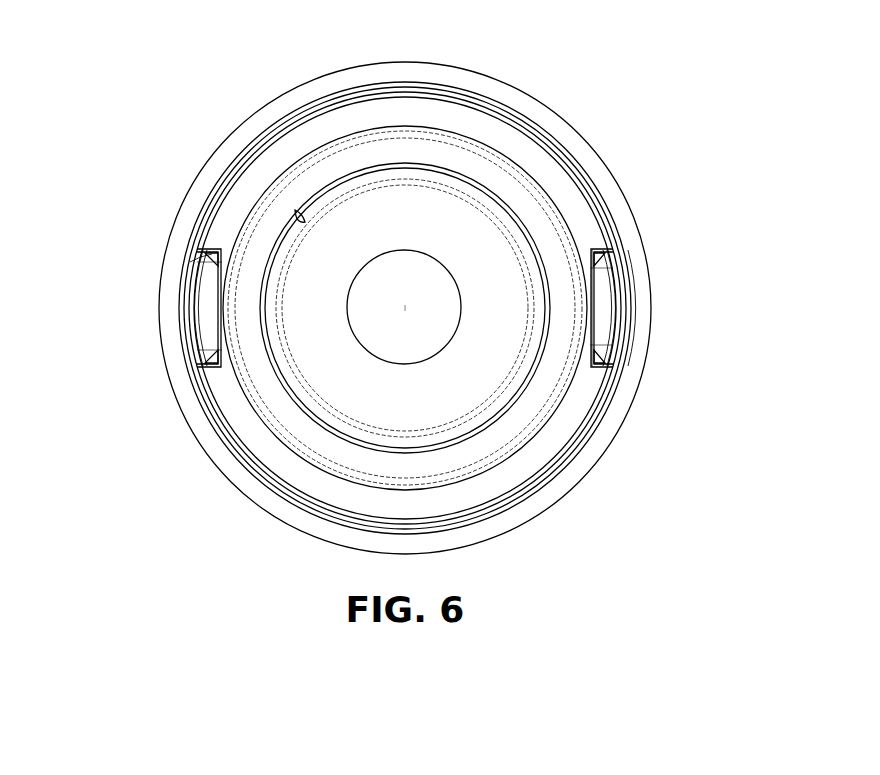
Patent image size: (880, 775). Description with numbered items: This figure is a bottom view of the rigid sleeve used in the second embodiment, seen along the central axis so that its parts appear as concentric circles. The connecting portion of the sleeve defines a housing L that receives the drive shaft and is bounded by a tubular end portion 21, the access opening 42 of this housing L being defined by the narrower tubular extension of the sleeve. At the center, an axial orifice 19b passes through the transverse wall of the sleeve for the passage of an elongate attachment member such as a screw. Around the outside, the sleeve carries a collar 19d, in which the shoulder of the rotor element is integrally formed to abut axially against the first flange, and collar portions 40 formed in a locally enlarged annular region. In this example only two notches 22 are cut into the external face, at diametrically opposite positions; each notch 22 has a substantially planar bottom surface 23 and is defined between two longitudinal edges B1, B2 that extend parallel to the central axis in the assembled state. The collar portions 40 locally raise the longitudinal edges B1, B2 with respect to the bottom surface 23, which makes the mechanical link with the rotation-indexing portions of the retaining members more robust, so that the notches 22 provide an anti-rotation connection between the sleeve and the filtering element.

The collar 19d is at (297, 88).
The collar portions 40 is at (475, 90).
The tubular end portion 21 is at (373, 153).
The access opening 42 is at (295, 210).
The housing L is at (413, 205).
The axial orifice 19b is at (427, 272).
The notches 22 is at (210, 305).
The bottom surface 23 is at (593, 300).
The longitudinal edge B1 is at (204, 267).
The longitudinal edge B2 is at (207, 347).